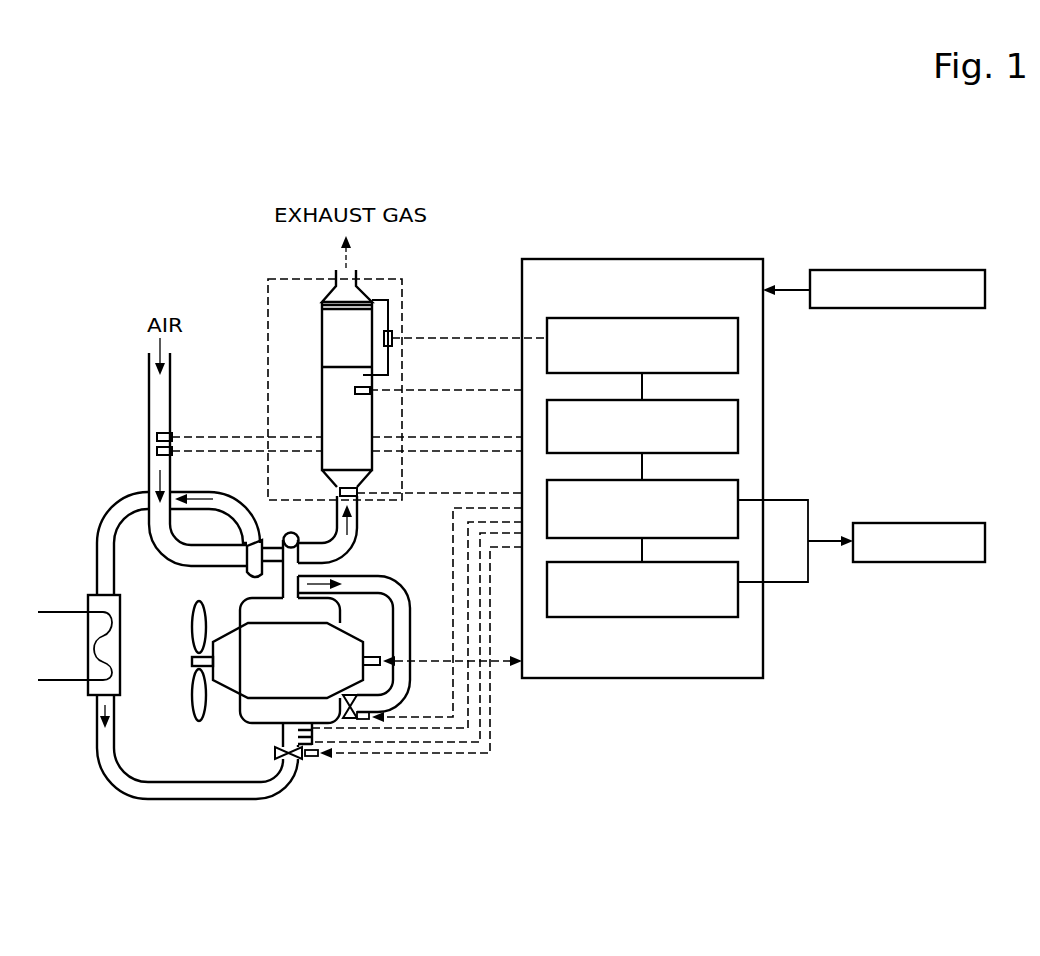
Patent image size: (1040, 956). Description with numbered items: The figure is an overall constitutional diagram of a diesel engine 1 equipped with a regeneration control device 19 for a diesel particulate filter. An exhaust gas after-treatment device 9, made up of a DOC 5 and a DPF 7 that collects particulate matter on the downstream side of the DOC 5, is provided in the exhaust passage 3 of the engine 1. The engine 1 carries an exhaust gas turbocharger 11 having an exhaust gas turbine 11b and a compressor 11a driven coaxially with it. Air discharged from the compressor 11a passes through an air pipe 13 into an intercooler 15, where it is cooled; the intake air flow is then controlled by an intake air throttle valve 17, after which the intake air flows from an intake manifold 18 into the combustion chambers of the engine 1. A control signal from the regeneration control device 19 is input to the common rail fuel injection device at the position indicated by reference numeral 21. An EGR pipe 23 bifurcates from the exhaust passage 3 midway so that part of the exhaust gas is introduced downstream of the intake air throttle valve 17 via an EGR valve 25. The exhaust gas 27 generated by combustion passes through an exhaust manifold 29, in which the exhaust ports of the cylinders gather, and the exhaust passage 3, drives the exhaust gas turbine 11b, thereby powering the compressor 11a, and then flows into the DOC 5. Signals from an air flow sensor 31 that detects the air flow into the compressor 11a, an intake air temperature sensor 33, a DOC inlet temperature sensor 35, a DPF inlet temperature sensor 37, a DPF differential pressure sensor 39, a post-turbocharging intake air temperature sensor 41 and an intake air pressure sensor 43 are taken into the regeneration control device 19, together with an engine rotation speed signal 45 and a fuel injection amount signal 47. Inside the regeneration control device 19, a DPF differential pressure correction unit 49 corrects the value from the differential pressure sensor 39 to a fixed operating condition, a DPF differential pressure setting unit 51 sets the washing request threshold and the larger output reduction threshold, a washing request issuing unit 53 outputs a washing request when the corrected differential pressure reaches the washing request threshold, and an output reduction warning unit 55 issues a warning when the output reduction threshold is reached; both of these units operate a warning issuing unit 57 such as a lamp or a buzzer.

The diesel engine 1 is at (232, 693).
The exhaust passage 3 is at (300, 561).
The DOC 5 is at (322, 430).
The DPF 7 is at (327, 337).
The exhaust gas after-treatment device 9 is at (268, 294).
The exhaust gas turbocharger 11 is at (272, 532).
The compressor 11a is at (245, 556).
The exhaust gas turbine 11b is at (292, 531).
The air pipe 13 is at (97, 535).
The intercooler 15 is at (88, 688).
The intake air throttle valve 17 is at (300, 760).
The intake manifold 18 is at (263, 725).
The regeneration control device 19 is at (571, 259).
The control signal input position 21 is at (373, 656).
The EGR pipe 23 is at (398, 592).
The EGR valve 25 is at (382, 695).
The exhaust gas 27 is at (356, 522).
The exhaust manifold 29 is at (393, 593).
The air flow sensor 31 is at (152, 436).
The intake air temperature sensor 33 is at (157, 451).
The DOC inlet temperature sensor 35 is at (358, 490).
The DPF inlet temperature sensor 37 is at (355, 390).
The DPF differential pressure sensor 39 is at (393, 338).
The post-turbocharging intake air temperature sensor 41 is at (313, 738).
The intake air pressure sensor 43 is at (316, 723).
The engine rotation speed signal 45 is at (838, 270).
The fuel injection amount signal 47 is at (498, 663).
The DPF differential pressure correction unit 49 is at (738, 339).
The DPF differential pressure setting unit 51 is at (738, 413).
The washing request issuing unit 53 is at (738, 490).
The output reduction warning unit 55 is at (738, 595).
The warning issuing unit 57 is at (891, 523).